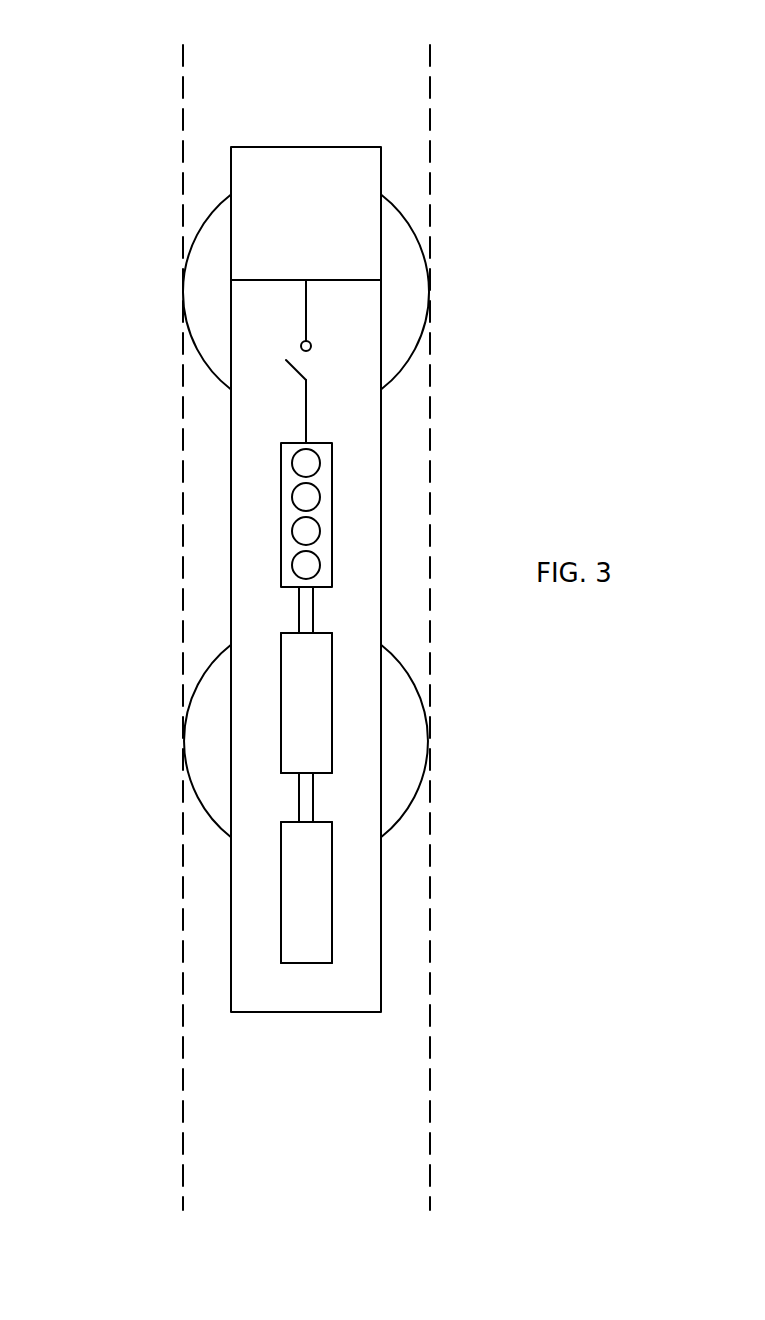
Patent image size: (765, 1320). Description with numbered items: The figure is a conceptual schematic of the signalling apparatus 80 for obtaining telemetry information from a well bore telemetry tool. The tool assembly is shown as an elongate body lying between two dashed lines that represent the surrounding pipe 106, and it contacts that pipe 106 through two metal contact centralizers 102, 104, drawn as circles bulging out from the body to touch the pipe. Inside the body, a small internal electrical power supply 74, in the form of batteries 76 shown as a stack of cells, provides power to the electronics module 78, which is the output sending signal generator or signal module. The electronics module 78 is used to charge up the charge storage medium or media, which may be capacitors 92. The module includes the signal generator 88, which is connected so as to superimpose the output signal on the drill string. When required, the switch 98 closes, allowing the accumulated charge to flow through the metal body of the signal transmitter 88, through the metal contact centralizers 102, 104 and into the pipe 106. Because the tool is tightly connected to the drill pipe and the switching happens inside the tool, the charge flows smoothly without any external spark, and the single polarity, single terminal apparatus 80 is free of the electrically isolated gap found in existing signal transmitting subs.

The internal electrical power supply 74 is at (307, 918).
The batteries 76 is at (307, 867).
The electronics module 78 is at (307, 740).
The apparatus 80 is at (245, 528).
The signal generator 88 is at (303, 685).
The capacitors 92 is at (293, 556).
The switch 98 is at (297, 373).
The metal contact centralizer 102 is at (183, 323).
The metal contact centralizer 104 is at (195, 795).
The pipe 106 is at (183, 1063).